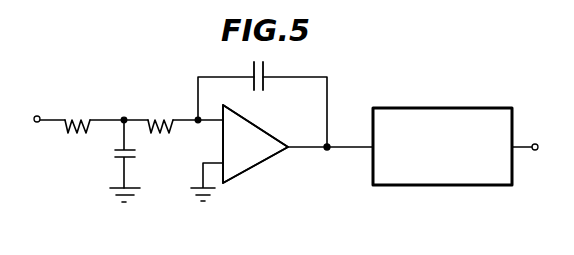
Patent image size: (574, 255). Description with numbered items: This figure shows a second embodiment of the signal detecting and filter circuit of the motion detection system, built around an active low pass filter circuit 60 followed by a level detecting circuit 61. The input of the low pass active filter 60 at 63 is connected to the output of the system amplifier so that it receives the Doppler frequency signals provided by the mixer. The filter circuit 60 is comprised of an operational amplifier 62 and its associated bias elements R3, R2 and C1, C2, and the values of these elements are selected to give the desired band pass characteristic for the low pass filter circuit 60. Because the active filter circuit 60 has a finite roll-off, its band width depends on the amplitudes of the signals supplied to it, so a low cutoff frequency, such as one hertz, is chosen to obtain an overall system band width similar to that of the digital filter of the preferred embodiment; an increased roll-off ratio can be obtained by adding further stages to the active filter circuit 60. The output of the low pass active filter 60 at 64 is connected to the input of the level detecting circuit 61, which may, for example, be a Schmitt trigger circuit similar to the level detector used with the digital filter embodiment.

The input of the low pass active filter 63 is at (37, 116).
The bias element (resistor) R2 is at (84, 118).
The bias element (resistor) R3 is at (173, 107).
The bias element (capacitor) C1 is at (115, 155).
The bias element (capacitor) C2 is at (257, 57).
The operational amplifier 62 is at (236, 162).
The active low pass filter circuit 60 is at (235, 196).
The output of the low pass active filter 64 is at (327, 150).
The level detecting circuit 61 is at (417, 188).